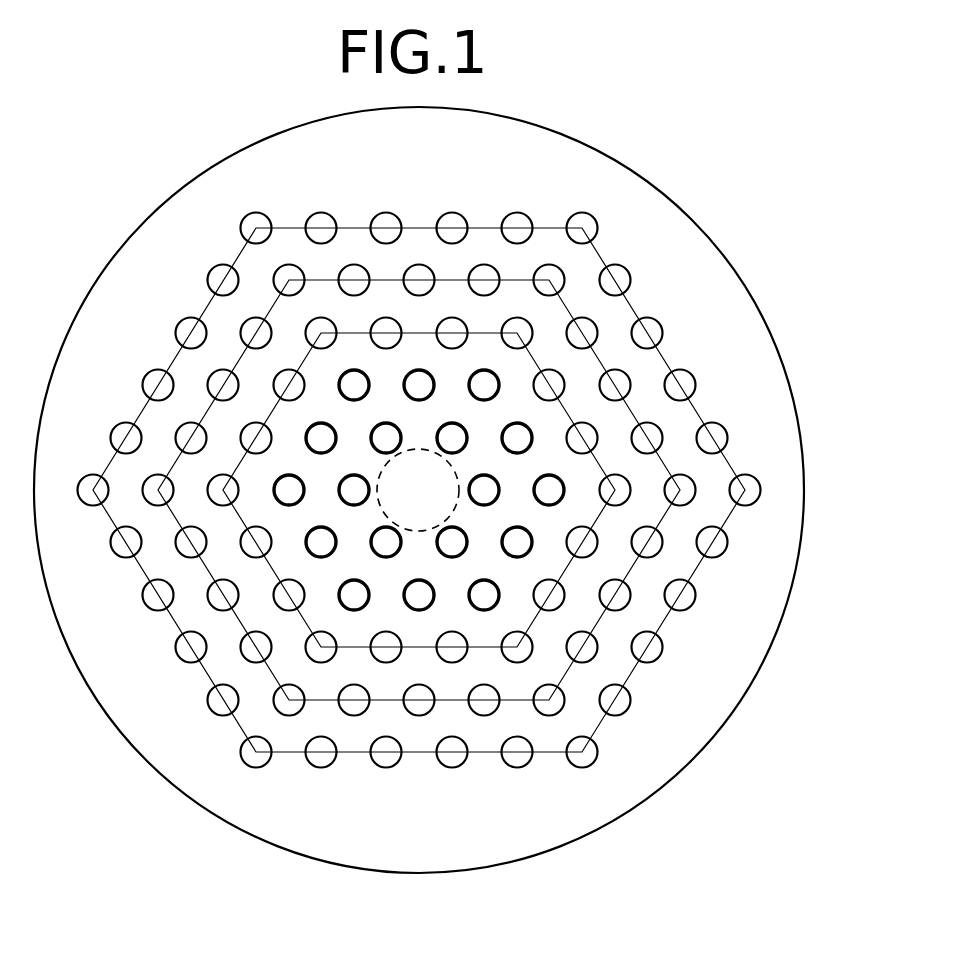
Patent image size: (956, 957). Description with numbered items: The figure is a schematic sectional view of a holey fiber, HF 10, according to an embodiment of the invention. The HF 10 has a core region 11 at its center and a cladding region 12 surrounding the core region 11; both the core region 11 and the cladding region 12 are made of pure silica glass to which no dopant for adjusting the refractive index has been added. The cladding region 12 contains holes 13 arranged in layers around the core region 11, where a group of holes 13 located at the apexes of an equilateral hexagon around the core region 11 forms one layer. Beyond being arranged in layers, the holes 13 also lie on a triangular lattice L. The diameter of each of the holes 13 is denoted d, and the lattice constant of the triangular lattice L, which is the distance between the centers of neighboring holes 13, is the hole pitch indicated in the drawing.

The HF 10 is at (716, 191).
The core region 11 is at (418, 531).
The cladding region 12 is at (663, 757).
The holes 13 is at (758, 480).
The diameter of each of the holes d is at (540, 203).
The triangular lattice L is at (601, 296).